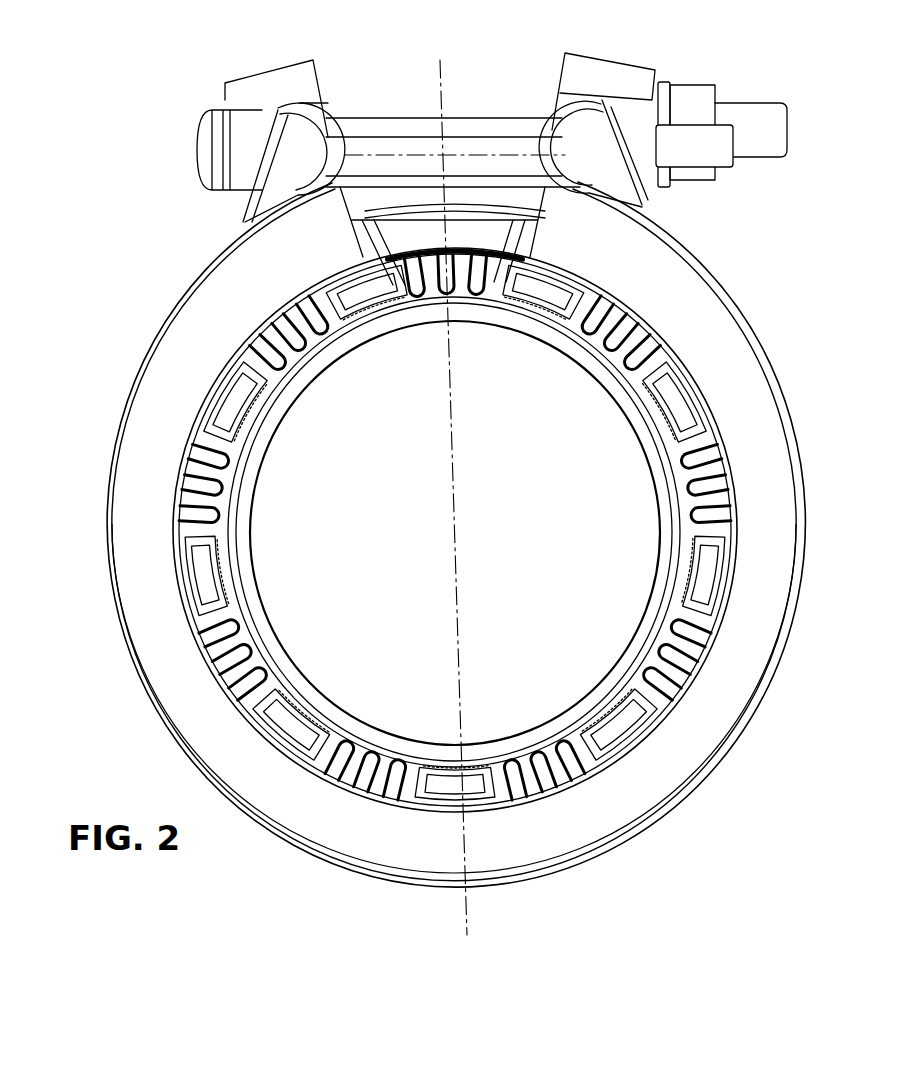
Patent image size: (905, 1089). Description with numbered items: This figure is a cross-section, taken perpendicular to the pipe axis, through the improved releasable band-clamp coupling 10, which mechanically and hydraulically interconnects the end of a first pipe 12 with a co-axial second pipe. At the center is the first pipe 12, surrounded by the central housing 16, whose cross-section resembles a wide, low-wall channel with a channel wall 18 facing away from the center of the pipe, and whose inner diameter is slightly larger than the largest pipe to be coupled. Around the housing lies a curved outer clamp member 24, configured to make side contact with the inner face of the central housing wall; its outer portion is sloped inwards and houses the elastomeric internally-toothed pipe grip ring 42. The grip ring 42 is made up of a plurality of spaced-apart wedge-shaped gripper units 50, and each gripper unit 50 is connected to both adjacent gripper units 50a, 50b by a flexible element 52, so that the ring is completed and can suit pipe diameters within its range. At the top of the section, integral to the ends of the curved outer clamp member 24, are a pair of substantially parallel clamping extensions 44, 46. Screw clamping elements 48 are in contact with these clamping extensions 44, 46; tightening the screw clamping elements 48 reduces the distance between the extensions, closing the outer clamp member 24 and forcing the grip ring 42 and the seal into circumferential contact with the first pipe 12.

The releasable band-clamp coupling 10 is at (693, 826).
The first pipe 12 is at (270, 642).
The central housing 16 is at (407, 207).
The channel wall 18 is at (490, 210).
The curved outer clamp member 24 is at (108, 480).
The pipe grip ring 42 is at (213, 523).
The clamping extension 44 is at (237, 96).
The clamping extension 46 is at (628, 73).
The screw clamping element 48 is at (665, 138).
The gripper unit 50 is at (690, 562).
The adjacent gripper unit 50a is at (672, 400).
The adjacent gripper unit 50b is at (613, 700).
The flexible element 52 is at (690, 473).